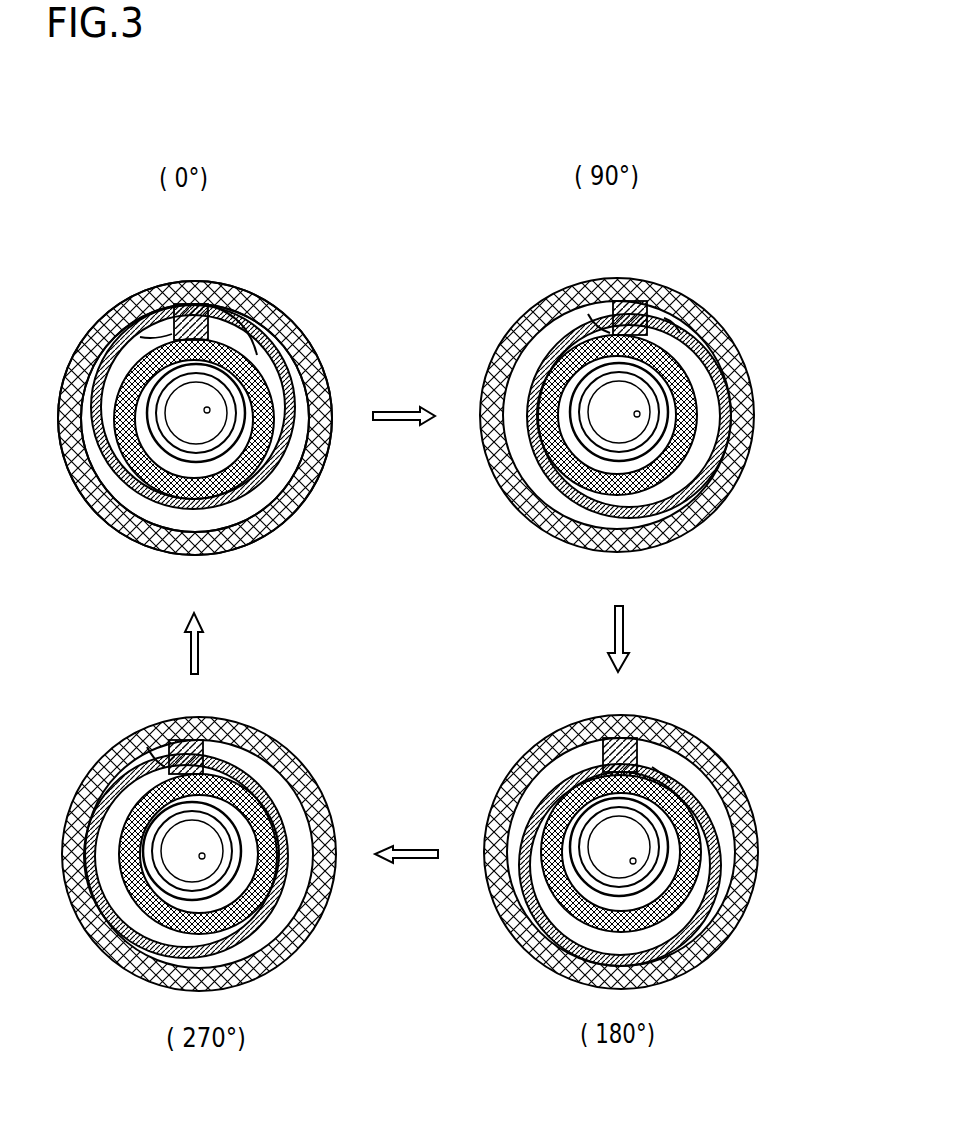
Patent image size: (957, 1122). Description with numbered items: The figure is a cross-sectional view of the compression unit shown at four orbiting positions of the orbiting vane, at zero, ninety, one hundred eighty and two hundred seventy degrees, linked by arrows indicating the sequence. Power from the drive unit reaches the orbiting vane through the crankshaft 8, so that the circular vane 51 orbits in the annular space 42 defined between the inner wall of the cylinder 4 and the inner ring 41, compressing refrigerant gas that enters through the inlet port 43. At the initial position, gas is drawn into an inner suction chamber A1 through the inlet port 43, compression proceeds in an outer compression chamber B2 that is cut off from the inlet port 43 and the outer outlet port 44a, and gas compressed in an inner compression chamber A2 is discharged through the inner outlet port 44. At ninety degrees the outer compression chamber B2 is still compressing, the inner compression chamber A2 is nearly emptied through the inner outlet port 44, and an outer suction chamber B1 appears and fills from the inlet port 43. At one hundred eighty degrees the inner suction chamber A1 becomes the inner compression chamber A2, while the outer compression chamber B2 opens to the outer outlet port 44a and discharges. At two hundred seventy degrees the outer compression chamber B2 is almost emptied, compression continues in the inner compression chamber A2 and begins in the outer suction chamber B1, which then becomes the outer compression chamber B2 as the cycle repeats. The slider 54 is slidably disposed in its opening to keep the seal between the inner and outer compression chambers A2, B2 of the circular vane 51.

The cylinder 4 is at (102, 510).
The crankshaft 8 is at (177, 410).
The inner ring 41 is at (118, 448).
The annular space 42 is at (137, 507).
The inlet port 43 is at (237, 288).
The inner outlet port 44 is at (122, 300).
The outer outlet port 44a is at (172, 300).
The circular vane 51 is at (297, 390).
The slider 54 is at (195, 292).
The inner suction chamber A1 is at (253, 347).
The inner compression chamber A2 is at (123, 368).
The outer suction chamber B1 is at (647, 338).
The outer compression chamber B2 is at (263, 495).